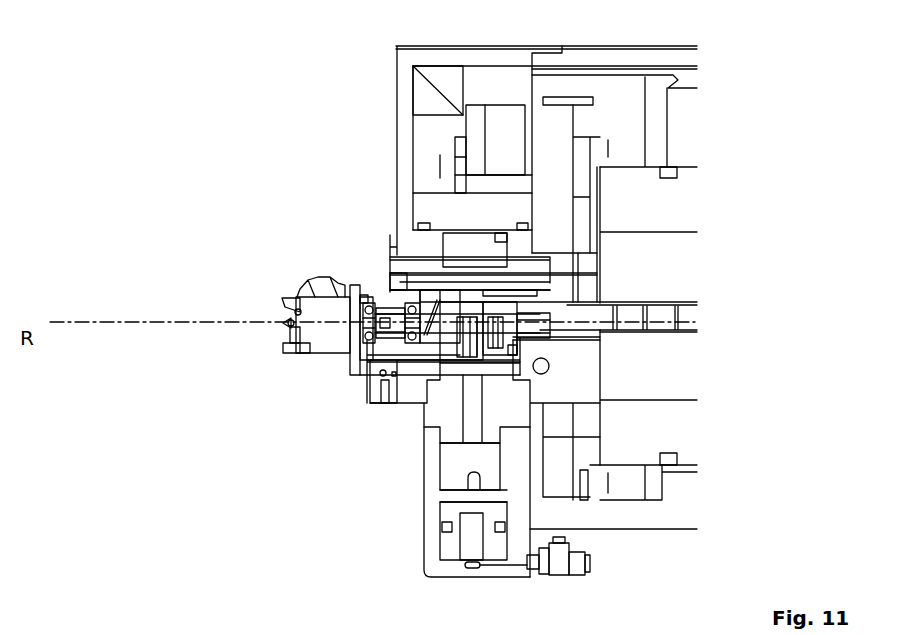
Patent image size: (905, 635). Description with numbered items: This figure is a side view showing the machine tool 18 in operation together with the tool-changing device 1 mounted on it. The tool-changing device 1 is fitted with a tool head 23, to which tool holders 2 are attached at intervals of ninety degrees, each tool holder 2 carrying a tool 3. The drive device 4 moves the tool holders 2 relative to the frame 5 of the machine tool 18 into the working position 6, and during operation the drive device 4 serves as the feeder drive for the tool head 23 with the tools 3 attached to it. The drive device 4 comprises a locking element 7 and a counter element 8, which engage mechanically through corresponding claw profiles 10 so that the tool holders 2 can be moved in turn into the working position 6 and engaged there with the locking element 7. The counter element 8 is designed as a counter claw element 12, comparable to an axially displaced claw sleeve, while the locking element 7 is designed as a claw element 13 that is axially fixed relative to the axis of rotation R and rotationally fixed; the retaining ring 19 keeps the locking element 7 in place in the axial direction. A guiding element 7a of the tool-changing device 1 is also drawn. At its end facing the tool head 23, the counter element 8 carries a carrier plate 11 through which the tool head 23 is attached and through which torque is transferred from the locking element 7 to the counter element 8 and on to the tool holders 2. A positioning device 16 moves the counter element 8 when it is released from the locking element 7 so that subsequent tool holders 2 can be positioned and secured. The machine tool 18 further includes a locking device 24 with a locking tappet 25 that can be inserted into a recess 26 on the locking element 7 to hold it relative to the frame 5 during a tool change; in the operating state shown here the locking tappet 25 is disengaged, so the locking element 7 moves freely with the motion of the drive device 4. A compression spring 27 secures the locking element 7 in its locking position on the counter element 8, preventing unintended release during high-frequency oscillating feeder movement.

The tool-changing device 1 is at (359, 264).
The tool holder 2 is at (288, 320).
The tool 3 is at (285, 325).
The drive device 4 is at (696, 298).
The frame 5 is at (670, 500).
The working position 6 is at (297, 332).
The locking element 7 is at (443, 327).
The guiding element 7a is at (480, 273).
The counter element 8 is at (430, 310).
The claw profile 10 is at (430, 337).
The carrier plate 11 is at (355, 337).
The counter claw element 12 is at (397, 309).
The claw element 13 is at (590, 326).
The positioning device 16 is at (388, 338).
The machine tool 18 is at (724, 95).
The retaining ring 19 is at (373, 337).
The tool head 23 is at (298, 308).
The locking device 24 is at (513, 459).
The locking tappet 25 is at (470, 462).
The recess 26 is at (467, 343).
The compression spring 27 is at (567, 340).